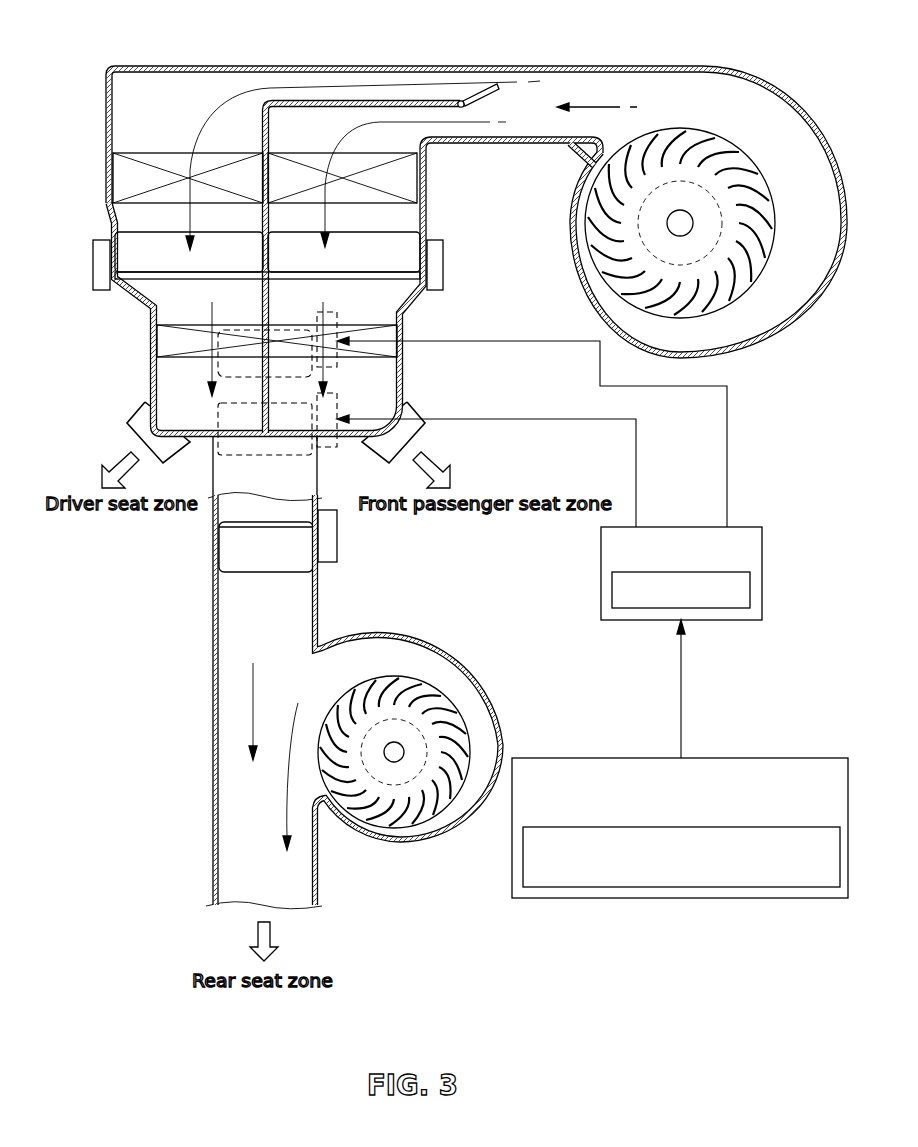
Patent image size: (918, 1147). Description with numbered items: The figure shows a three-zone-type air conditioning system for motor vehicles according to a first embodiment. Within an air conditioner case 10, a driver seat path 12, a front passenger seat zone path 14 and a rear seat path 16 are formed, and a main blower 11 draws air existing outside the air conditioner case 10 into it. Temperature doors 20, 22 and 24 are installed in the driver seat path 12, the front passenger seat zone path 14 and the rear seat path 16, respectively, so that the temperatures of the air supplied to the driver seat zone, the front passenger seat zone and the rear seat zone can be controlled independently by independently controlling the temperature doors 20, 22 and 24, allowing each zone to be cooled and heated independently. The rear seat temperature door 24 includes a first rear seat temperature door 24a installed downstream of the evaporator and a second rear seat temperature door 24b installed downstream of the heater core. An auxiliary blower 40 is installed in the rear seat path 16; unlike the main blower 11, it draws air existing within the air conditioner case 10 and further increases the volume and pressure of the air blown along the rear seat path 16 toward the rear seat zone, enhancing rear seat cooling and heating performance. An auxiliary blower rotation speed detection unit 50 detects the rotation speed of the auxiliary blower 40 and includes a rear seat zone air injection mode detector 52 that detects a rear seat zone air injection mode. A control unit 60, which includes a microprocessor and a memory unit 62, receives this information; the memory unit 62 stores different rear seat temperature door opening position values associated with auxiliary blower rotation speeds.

The air conditioner case 10 is at (389, 66).
The main blower 11 is at (703, 316).
The driver seat path 12 is at (183, 140).
The front passenger seat zone path 14 is at (321, 140).
The rear seat path 16 is at (275, 613).
The temperature door 20 is at (135, 240).
The temperature door 22 is at (412, 240).
The rear seat temperature door 24 is at (79, 343).
The first rear seat temperature door 24a is at (200, 366).
The second rear seat temperature door 24b is at (227, 422).
The auxiliary blower 40 is at (453, 722).
The auxiliary blower rotation speed detection unit 50 is at (773, 758).
The rear seat zone air injection mode detector 52 is at (788, 887).
The control unit 60 is at (763, 550).
The memory unit 62 is at (751, 588).